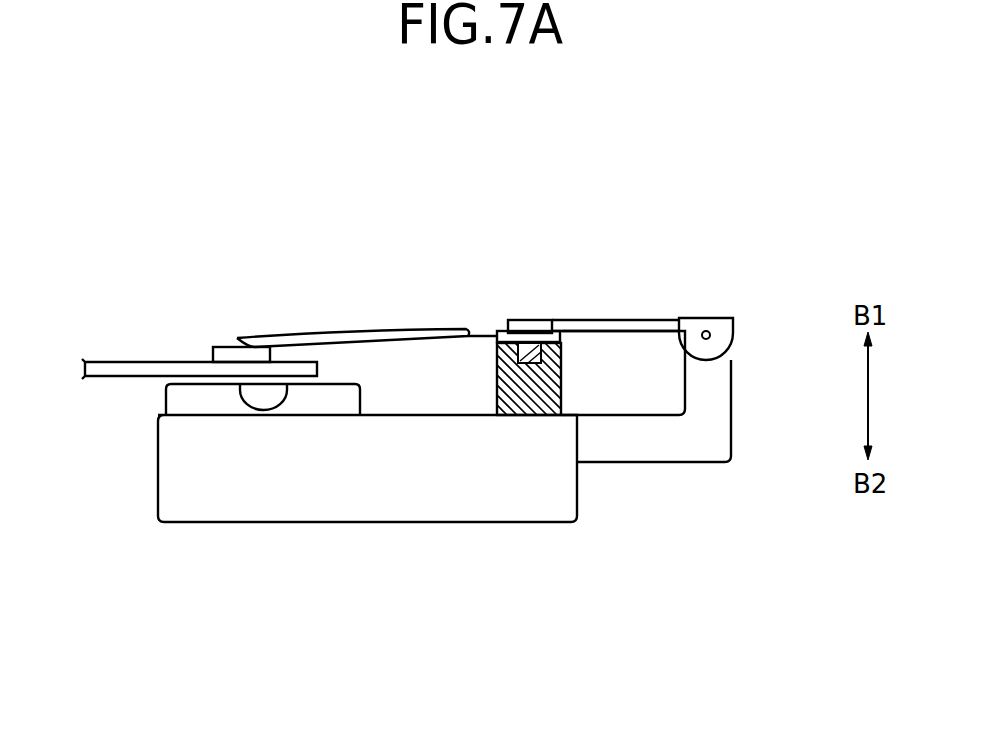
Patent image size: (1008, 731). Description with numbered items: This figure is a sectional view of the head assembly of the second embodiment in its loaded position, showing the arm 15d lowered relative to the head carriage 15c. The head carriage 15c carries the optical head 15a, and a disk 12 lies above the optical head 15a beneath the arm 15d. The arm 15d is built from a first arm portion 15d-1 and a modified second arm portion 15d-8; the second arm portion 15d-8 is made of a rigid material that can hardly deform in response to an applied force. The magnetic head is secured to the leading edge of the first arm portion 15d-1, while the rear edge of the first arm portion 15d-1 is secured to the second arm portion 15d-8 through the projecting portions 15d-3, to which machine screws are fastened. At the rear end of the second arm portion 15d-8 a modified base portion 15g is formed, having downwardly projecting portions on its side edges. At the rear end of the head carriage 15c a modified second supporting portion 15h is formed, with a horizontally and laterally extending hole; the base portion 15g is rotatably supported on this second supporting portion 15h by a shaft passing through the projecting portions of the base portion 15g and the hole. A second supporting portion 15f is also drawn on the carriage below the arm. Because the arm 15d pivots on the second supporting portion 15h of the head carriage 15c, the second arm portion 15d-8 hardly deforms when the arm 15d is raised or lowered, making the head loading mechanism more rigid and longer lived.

The disk 12 is at (126, 363).
The arm 15d is at (227, 355).
The first arm portion 15d-1 is at (372, 330).
The projecting portions 15d-3 is at (532, 322).
The second arm portion 15d-8 is at (607, 318).
The base portion 15g is at (720, 328).
The second supporting portion 15f is at (550, 380).
The second supporting portion 15h is at (720, 400).
The optical head 15a is at (175, 403).
The head carriage 15c is at (560, 492).